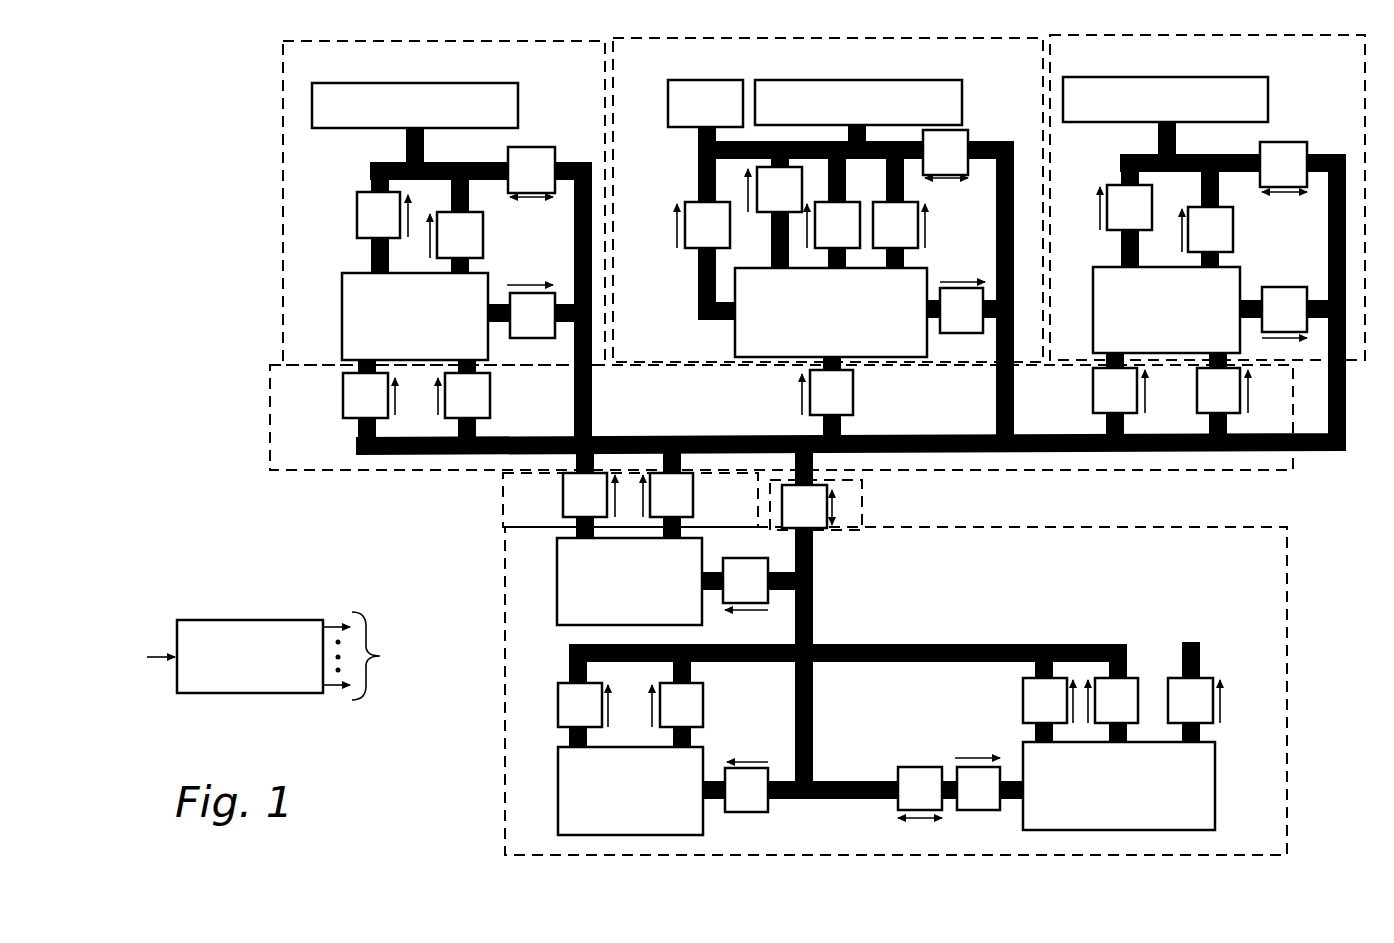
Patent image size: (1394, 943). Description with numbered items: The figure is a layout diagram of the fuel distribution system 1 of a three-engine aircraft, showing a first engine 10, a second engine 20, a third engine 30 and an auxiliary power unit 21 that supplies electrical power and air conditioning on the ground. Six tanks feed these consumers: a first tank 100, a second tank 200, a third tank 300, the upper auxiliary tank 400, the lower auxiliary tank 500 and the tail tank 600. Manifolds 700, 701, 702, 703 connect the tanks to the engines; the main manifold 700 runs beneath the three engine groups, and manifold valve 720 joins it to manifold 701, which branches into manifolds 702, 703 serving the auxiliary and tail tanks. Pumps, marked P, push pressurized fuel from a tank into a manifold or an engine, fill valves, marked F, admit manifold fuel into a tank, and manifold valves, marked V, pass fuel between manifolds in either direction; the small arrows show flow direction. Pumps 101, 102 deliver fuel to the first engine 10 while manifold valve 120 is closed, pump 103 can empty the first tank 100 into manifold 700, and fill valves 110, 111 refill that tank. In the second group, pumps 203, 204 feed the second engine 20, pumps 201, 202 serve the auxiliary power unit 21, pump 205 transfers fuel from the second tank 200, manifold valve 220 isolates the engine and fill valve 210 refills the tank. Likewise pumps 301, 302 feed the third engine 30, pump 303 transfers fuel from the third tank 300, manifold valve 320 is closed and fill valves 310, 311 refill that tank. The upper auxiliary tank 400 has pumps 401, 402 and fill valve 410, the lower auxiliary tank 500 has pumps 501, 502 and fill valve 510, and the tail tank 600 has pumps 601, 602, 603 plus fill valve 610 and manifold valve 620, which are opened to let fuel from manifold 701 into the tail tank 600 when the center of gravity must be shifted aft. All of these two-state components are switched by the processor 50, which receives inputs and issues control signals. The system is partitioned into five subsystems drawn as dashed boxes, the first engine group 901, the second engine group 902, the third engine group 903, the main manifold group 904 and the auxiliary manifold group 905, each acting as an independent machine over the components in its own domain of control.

The fuel distribution system 1 is at (176, 65).
The engine 1 10 is at (519, 101).
The engine 2 20 is at (962, 95).
The auxiliary power unit (APU) 21 is at (668, 100).
The engine 3 30 is at (1268, 98).
The processor (controller) 50 is at (263, 620).
The tank 1 100 is at (488, 275).
The pump 101 is at (357, 225).
The pump 102 is at (483, 233).
The pump 103 is at (548, 338).
The fill valve 110 is at (343, 395).
The fill valve 111 is at (490, 393).
The manifold valve 120 is at (533, 147).
The tank 2 200 is at (927, 272).
The pump 201 is at (690, 249).
The pump 202 is at (780, 213).
The pump 203 is at (850, 202).
The pump 204 is at (917, 203).
The pump 205 is at (960, 333).
The fill valve 210 is at (853, 398).
The manifold valve 220 is at (968, 135).
The tank 3 300 is at (1240, 270).
The pump 301 is at (1107, 228).
The pump 302 is at (1233, 228).
The pump 303 is at (1290, 287).
The fill valve 310 is at (1093, 390).
The fill valve 311 is at (1197, 398).
The manifold valve 320 is at (1288, 142).
The upper auxiliary tank 400 is at (557, 583).
The pump 401 is at (563, 497).
The pump 402 is at (693, 493).
The fill valve 410 is at (745, 558).
The lower auxiliary tank 500 is at (703, 755).
The pump 501 is at (558, 710).
The pump 502 is at (703, 700).
The fill valve 510 is at (748, 812).
The tail tank 600 is at (1023, 752).
The pump 601 is at (1023, 705).
The pump 602 is at (1140, 685).
The pump 603 is at (1213, 685).
The fill valve 610 is at (978, 812).
The manifold valve 620 is at (920, 767).
The manifold 700 is at (1337, 450).
The manifold 701 is at (813, 618).
The manifold 702 is at (770, 645).
The manifold 703 is at (925, 645).
The manifold valve 720 is at (813, 530).
The ENG1 subsystem 901 is at (430, 69).
The ENG2 subsystem 902 is at (763, 62).
The ENG3 subsystem 903 is at (1202, 61).
The MAIN MANIFOLD subsystem 904 is at (270, 440).
The AUX MANIFOLD subsystem 905 is at (1275, 554).